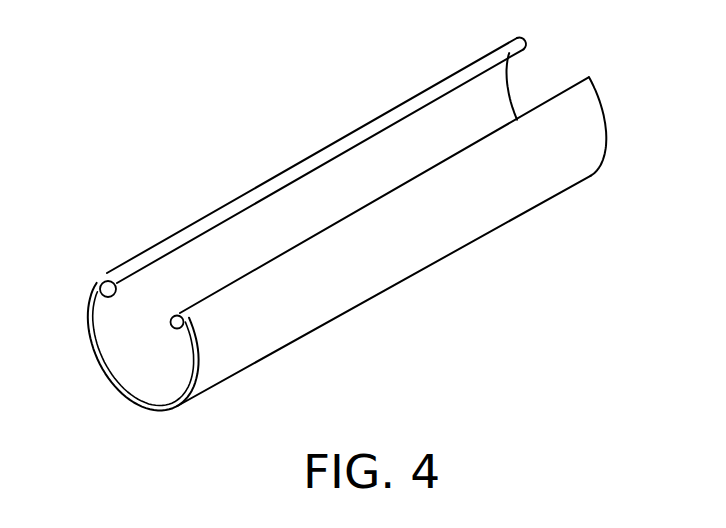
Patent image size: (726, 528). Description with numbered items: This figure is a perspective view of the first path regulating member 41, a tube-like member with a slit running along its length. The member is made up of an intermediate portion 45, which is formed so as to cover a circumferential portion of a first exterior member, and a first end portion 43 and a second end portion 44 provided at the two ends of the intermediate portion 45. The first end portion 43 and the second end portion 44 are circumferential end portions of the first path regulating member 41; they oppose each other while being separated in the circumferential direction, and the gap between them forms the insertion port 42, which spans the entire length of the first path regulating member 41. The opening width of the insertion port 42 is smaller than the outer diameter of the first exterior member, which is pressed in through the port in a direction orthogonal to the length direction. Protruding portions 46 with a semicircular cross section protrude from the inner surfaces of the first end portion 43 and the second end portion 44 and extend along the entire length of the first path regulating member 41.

The first path regulating member 41 is at (249, 188).
The insertion port 42 is at (412, 170).
The first end portion 43 is at (318, 158).
The second end portion 44 is at (377, 202).
The intermediate portion 45 is at (146, 380).
The protruding portion 46 is at (98, 289).